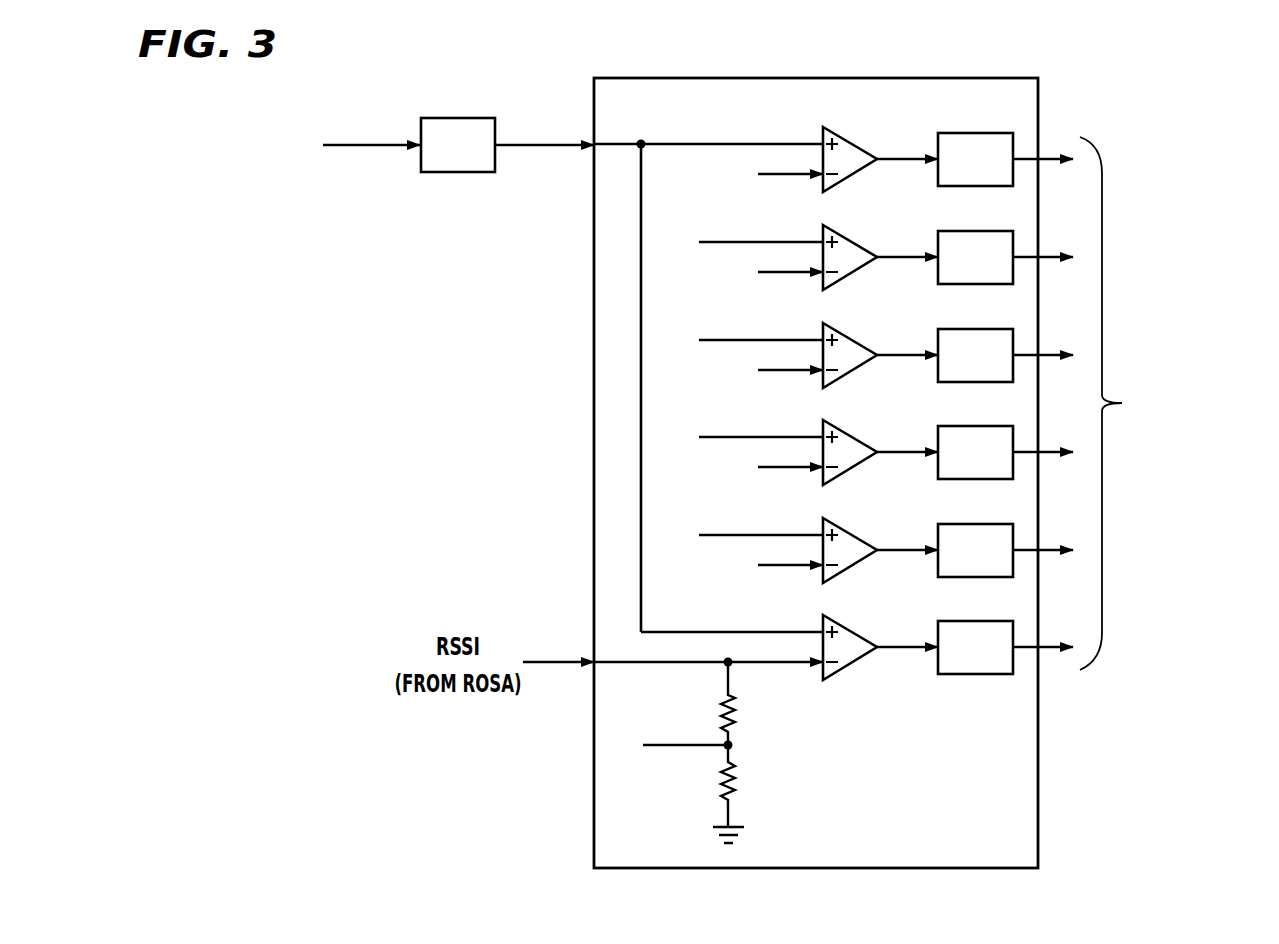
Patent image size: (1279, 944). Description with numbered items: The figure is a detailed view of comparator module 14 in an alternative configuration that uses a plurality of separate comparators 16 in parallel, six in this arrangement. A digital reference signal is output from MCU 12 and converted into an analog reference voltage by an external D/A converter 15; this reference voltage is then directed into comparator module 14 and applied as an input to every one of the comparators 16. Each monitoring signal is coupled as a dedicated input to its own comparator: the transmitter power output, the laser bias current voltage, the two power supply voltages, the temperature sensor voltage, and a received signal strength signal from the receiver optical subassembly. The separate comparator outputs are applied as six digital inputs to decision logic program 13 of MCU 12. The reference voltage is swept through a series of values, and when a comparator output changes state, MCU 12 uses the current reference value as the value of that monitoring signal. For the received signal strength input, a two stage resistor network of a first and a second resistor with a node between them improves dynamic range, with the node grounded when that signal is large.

The MCU 12 is at (257, 146).
The decision logic program 13 is at (1161, 403).
The comparator module 14 is at (943, 78).
The D/A converter 15 is at (455, 118).
The comparators 16 is at (842, 135).